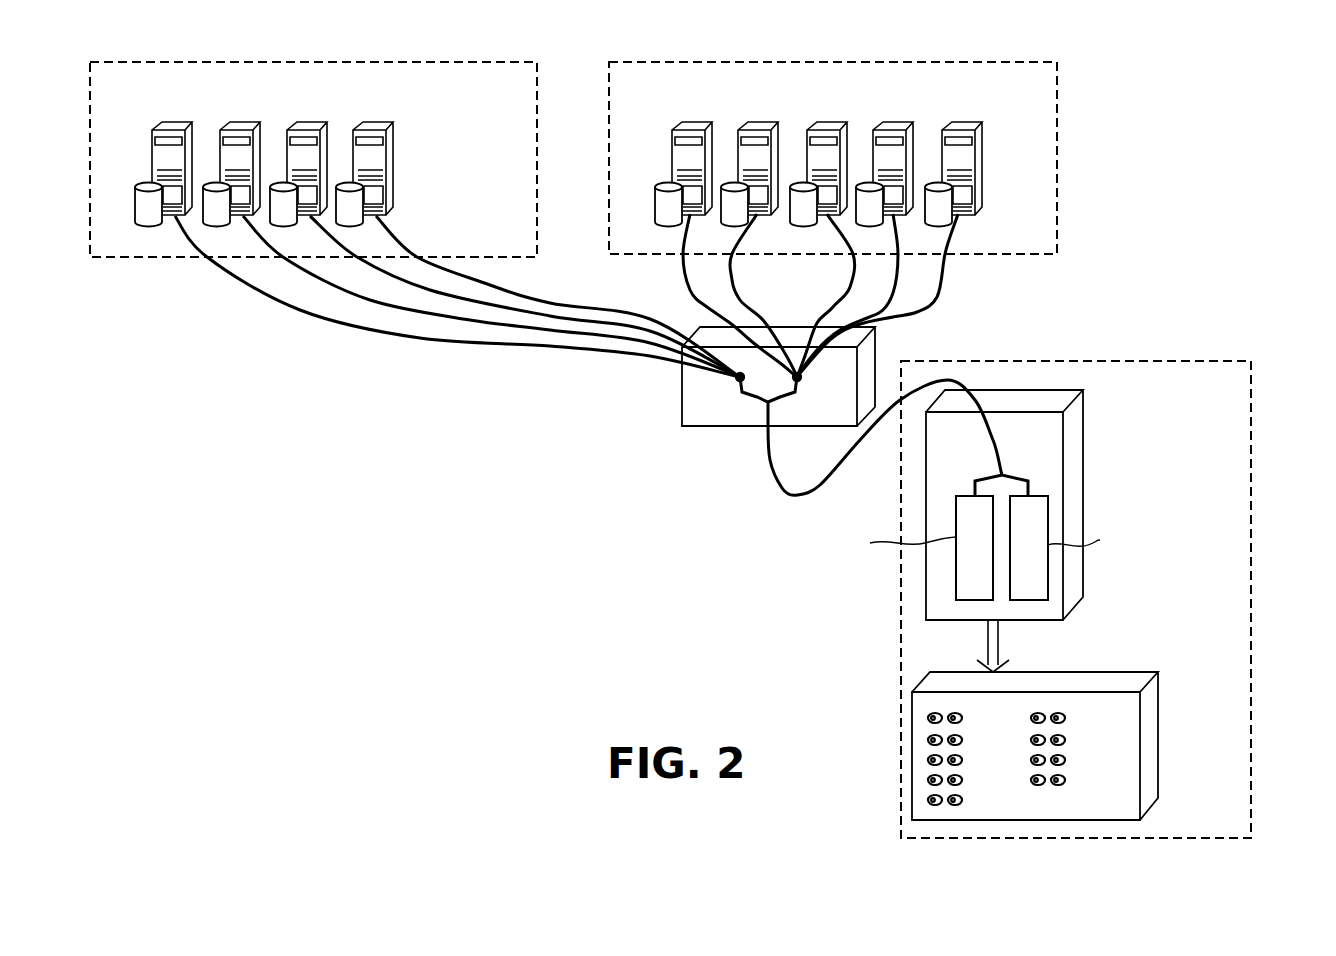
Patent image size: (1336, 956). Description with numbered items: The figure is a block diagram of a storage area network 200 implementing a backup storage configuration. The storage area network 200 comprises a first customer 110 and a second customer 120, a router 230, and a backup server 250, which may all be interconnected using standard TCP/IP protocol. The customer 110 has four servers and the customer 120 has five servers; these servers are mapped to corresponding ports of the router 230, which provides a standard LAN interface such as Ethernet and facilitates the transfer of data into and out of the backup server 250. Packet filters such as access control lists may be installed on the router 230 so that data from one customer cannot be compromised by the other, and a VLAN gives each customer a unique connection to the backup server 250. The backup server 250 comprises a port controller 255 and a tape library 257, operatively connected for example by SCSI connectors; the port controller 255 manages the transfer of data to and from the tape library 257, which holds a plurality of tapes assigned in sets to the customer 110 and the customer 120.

The storage area network 200 is at (460, 841).
The customer 110 is at (437, 60).
The customer 120 is at (933, 60).
The router 230 is at (875, 347).
The backup server 250 is at (1251, 637).
The port controller 255 is at (1083, 500).
The tape library 257 is at (1158, 695).